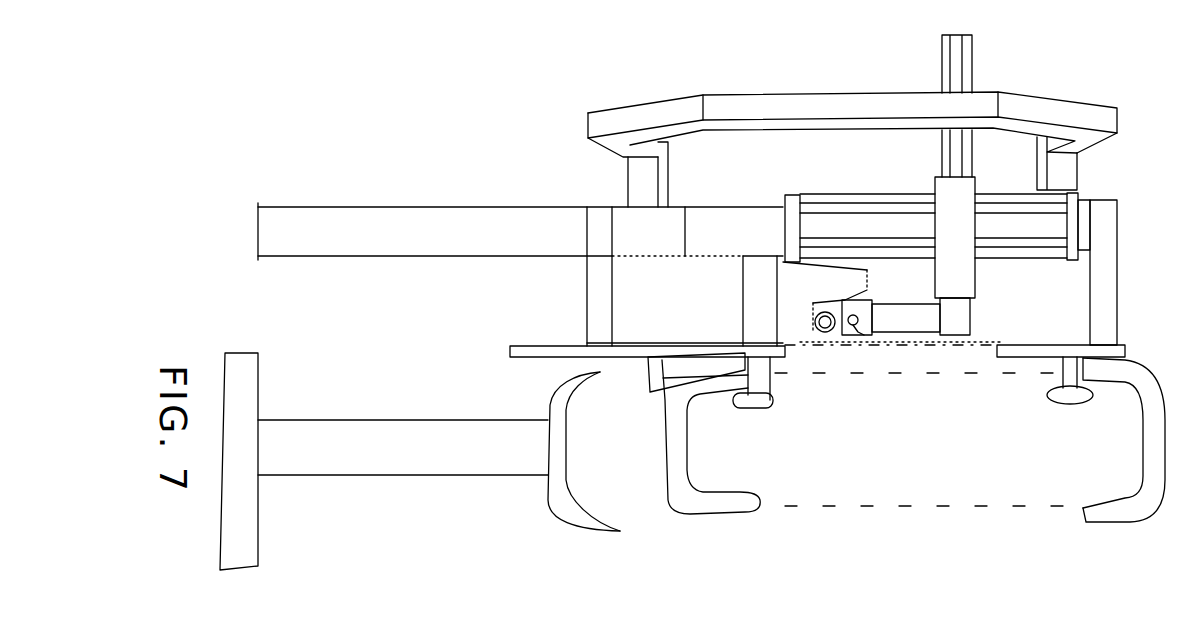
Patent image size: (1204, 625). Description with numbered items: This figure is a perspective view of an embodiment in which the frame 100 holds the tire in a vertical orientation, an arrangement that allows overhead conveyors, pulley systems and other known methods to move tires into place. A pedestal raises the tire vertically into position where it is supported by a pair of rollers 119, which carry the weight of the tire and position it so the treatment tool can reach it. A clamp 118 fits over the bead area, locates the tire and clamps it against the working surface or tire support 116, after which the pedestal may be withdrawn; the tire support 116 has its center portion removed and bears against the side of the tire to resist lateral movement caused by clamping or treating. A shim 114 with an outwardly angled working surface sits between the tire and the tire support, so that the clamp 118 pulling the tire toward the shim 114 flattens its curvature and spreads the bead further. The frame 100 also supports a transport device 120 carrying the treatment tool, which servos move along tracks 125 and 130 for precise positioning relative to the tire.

The frame 100 is at (497, 222).
The shim 114 is at (647, 376).
The tire support 116 is at (548, 346).
The clamp 118 is at (758, 408).
The rollers 119 is at (1073, 398).
The transport device 120 is at (967, 283).
The track 125 is at (1050, 220).
The track 130 is at (965, 55).